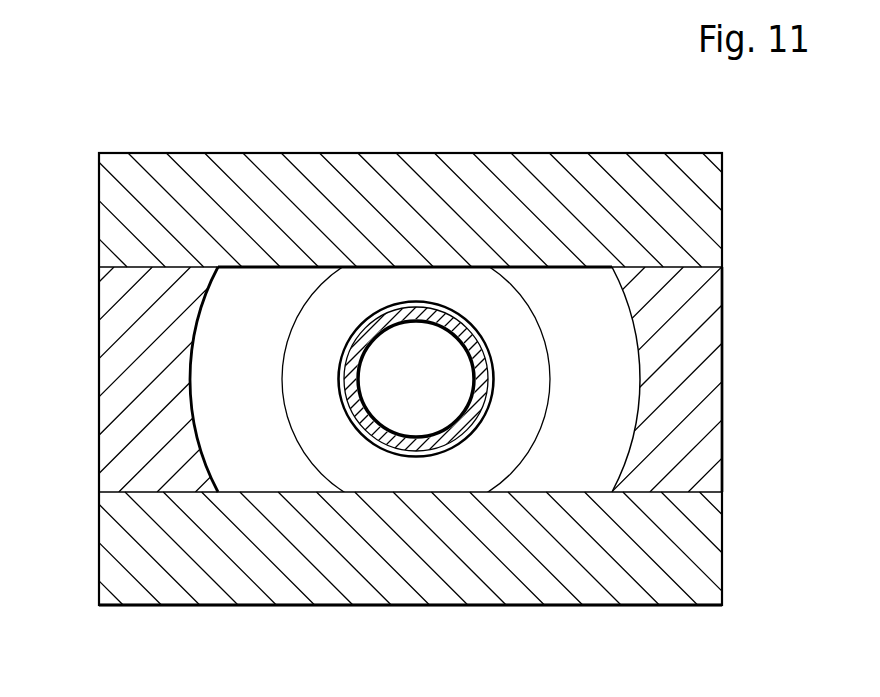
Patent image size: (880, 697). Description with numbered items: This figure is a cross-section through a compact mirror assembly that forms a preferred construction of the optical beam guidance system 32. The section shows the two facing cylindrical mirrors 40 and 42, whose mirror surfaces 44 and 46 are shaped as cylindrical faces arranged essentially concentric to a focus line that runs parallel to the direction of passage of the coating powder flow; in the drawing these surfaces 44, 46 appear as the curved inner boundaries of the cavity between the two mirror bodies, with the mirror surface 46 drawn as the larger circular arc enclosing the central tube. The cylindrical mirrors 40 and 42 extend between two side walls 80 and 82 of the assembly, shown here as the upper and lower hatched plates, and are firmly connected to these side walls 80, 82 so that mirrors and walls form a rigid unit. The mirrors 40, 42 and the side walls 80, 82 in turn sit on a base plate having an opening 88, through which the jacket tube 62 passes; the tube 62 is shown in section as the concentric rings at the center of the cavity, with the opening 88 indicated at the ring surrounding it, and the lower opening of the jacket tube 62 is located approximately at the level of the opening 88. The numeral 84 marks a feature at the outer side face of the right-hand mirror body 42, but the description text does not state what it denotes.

The optical beam guidance system 32 is at (742, 458).
The cylindrical mirror 40 is at (114, 330).
The cylindrical mirror 42 is at (702, 345).
The mirror surface 44 is at (192, 358).
The mirror surface 46 is at (636, 395).
The jacket tube 62 is at (452, 433).
The side wall 80 is at (698, 208).
The side wall 82 is at (693, 540).
The side face 84 is at (723, 288).
The opening 88 is at (382, 445).